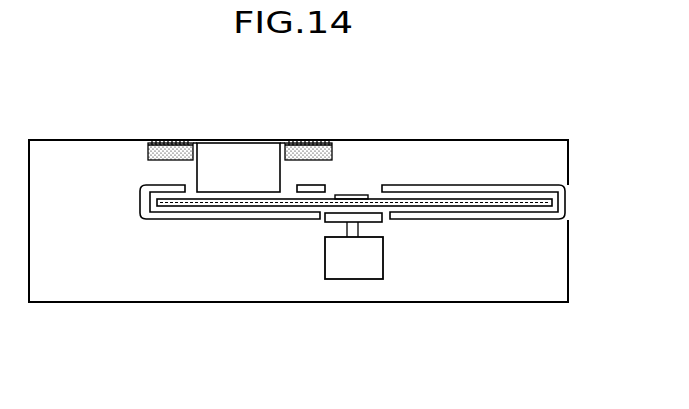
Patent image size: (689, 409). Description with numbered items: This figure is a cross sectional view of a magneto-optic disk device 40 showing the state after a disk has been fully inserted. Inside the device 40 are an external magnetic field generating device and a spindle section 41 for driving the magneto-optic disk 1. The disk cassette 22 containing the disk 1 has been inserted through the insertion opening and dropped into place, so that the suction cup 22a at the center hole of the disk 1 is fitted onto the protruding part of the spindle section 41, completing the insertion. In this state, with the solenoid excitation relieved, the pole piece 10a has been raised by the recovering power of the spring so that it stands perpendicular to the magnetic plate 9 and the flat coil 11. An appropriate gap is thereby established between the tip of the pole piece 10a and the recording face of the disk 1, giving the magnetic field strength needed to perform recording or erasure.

The magneto-optic disk 1 is at (565, 203).
The magnetic plate 9 is at (194, 140).
The pole piece 10a is at (257, 148).
The flat coil 11 is at (161, 140).
The disk cassette 22 is at (518, 184).
The suction cup 22a is at (343, 196).
The magneto-optic disk device 40 is at (569, 273).
The spindle section 41 is at (384, 255).